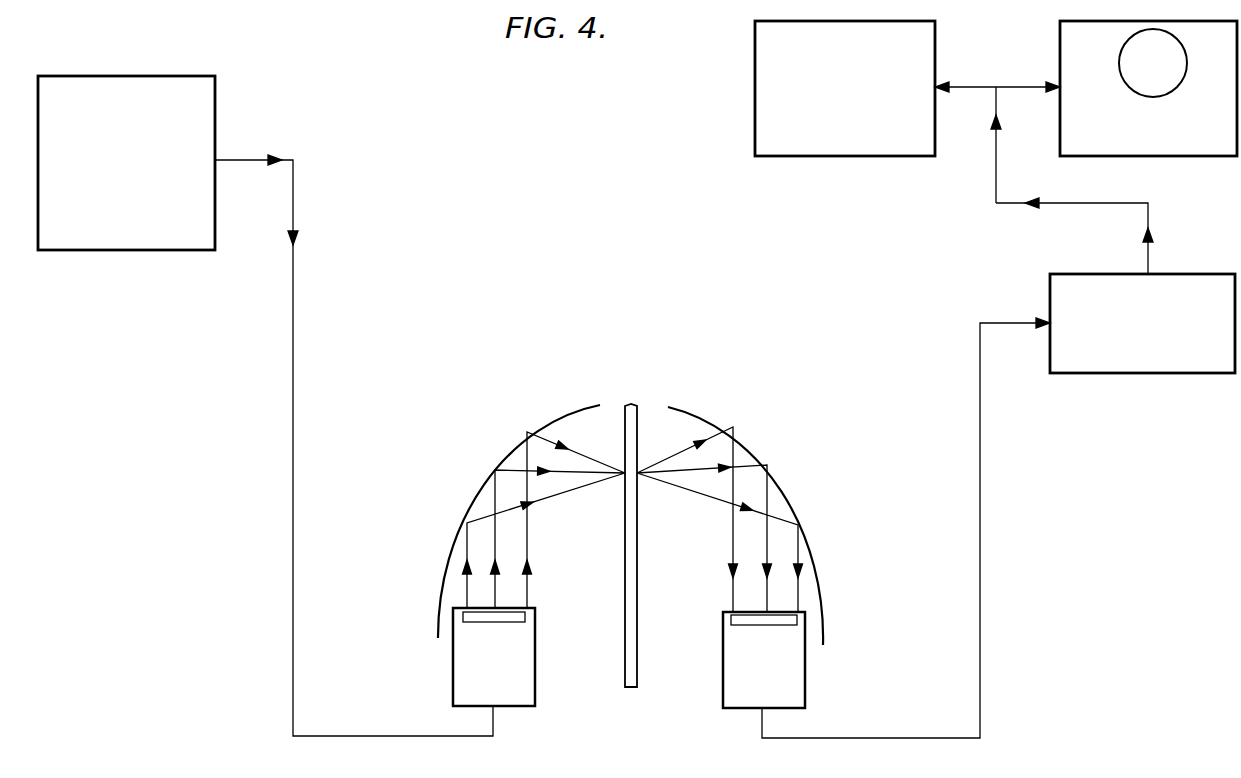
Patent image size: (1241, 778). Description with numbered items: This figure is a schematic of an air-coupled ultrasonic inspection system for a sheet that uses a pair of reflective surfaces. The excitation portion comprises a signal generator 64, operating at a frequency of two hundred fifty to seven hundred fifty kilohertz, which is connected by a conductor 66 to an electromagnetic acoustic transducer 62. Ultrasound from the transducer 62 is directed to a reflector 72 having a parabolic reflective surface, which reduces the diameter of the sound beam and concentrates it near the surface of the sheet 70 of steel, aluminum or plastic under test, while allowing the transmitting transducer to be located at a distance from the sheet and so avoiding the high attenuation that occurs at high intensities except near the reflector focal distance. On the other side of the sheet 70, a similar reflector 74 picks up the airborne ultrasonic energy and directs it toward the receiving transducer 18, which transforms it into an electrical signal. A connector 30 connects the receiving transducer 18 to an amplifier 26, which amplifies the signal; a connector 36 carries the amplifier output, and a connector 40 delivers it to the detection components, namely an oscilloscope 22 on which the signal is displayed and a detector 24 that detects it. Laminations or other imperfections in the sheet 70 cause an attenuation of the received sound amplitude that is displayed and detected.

The signal generator 64 is at (208, 122).
The conductor 66 is at (293, 378).
The electromagnetic acoustic transducer 62 is at (518, 666).
The reflector 72 is at (557, 407).
The sheet 70 is at (633, 602).
The reflector 74 is at (793, 502).
The receiving transducer 18 is at (795, 682).
The connector 30 is at (982, 517).
The amplifier 26 is at (1167, 363).
The connector 36 is at (1093, 207).
The connector 40 is at (977, 85).
The detector 24 is at (928, 42).
The oscilloscope 22 is at (1173, 140).